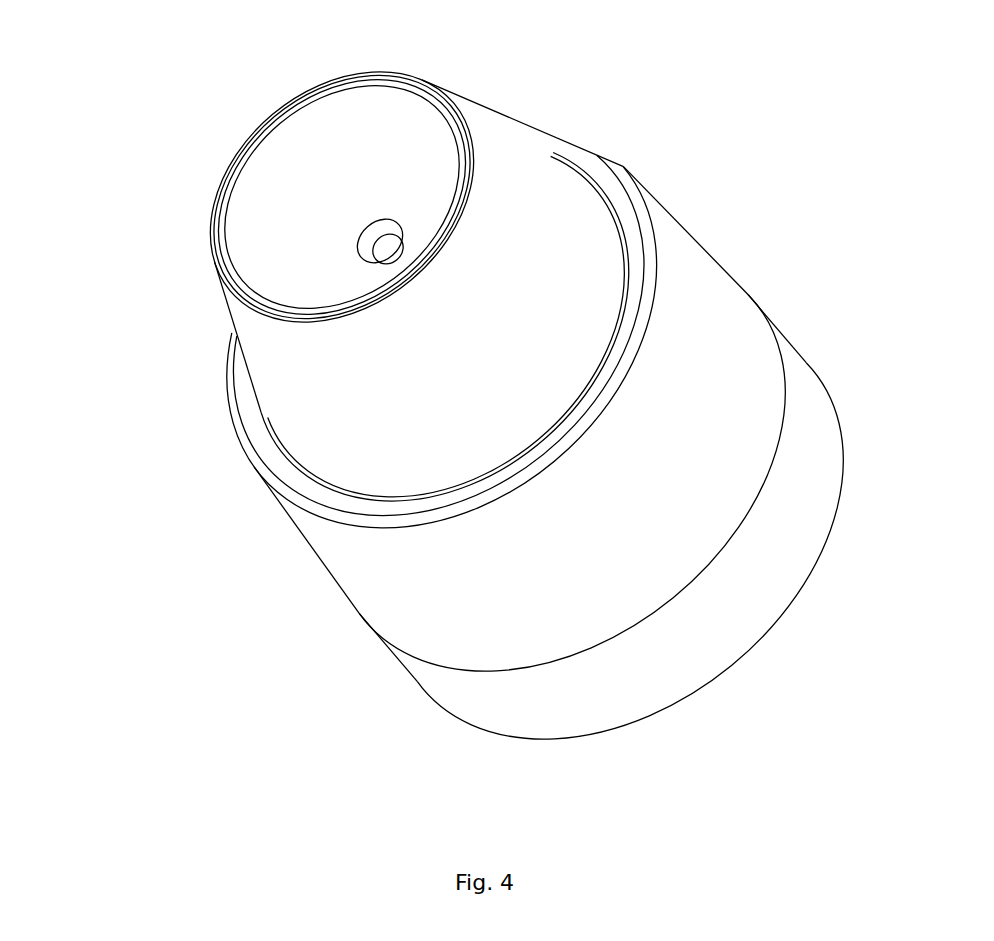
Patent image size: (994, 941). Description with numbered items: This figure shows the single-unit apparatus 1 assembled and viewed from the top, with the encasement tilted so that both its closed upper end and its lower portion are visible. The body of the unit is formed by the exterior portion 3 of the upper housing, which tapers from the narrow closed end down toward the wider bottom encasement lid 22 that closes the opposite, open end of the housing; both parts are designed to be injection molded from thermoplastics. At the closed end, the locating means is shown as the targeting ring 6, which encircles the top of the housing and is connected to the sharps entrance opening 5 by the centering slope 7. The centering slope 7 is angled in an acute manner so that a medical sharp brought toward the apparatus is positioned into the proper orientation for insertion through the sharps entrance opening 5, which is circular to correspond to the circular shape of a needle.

The apparatus 1 is at (222, 140).
The exterior portion 3 is at (332, 545).
The sharps entrance opening 5 is at (355, 243).
The targeting ring 6 is at (455, 225).
The centering slope 7 is at (400, 157).
The bottom encasement lid 22 is at (733, 622).